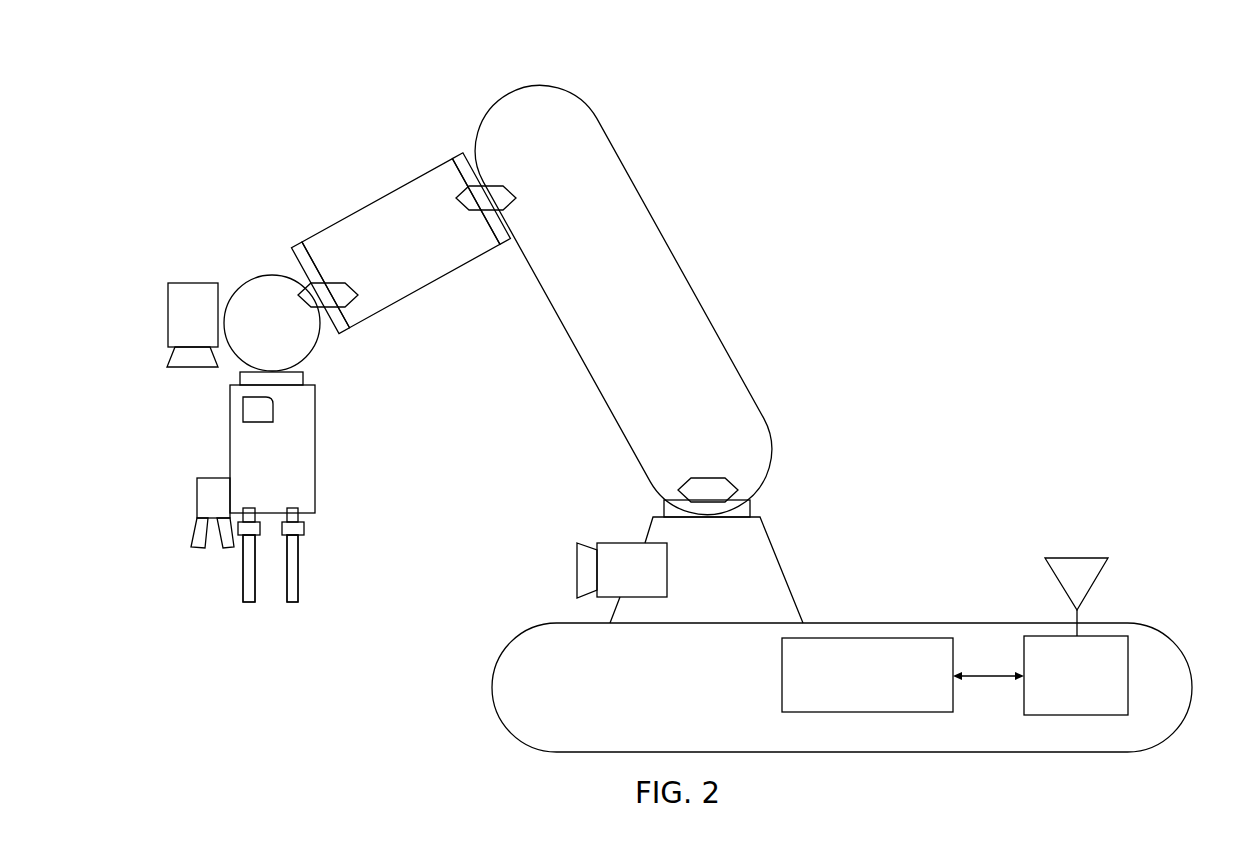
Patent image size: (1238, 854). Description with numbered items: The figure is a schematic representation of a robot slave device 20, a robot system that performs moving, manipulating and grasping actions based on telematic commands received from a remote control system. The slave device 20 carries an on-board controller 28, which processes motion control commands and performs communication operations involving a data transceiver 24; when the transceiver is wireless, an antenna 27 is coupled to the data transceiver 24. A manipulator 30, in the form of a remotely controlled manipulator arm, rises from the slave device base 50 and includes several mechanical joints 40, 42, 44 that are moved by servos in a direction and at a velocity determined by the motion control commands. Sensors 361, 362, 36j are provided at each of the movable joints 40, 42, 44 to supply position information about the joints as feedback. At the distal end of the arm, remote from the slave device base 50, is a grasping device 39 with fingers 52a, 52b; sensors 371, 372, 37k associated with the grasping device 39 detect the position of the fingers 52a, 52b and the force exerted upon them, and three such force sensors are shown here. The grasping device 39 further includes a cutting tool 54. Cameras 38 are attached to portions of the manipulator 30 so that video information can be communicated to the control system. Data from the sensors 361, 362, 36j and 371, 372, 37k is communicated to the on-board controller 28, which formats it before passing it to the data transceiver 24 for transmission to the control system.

The slave device 20 is at (975, 357).
The data transceiver 24 is at (1128, 677).
The antenna 27 is at (1050, 572).
The on-board controller 28 is at (782, 677).
The manipulator 30 is at (256, 163).
The sensor 361 is at (682, 488).
The sensor 362 is at (462, 197).
The sensor 36j is at (300, 295).
The sensor 371 is at (260, 528).
The sensor 372 is at (304, 528).
The sensor 37k is at (242, 413).
The camera 38 is at (653, 563).
The grasping device 39 is at (352, 560).
The mechanical joint 40 is at (600, 498).
The mechanical joint 42 is at (465, 107).
The mechanical joint 44 is at (355, 374).
The slave device base 50 is at (492, 685).
The finger 52a is at (243, 587).
The finger 52b is at (300, 575).
The cutting tool 54 is at (160, 517).